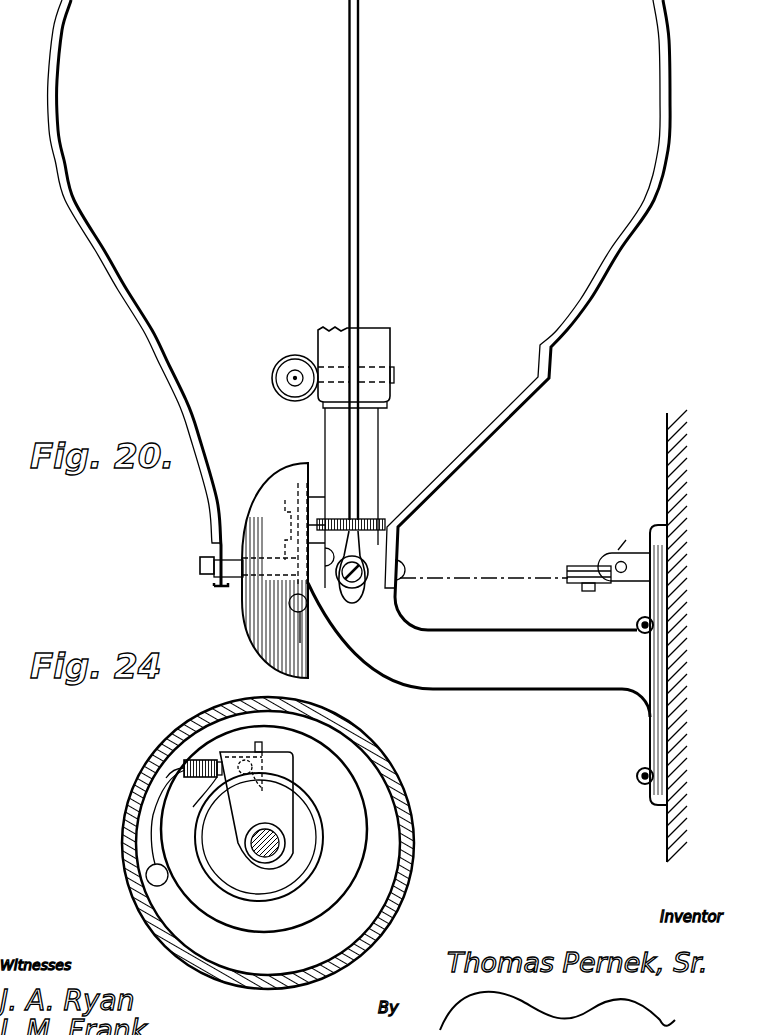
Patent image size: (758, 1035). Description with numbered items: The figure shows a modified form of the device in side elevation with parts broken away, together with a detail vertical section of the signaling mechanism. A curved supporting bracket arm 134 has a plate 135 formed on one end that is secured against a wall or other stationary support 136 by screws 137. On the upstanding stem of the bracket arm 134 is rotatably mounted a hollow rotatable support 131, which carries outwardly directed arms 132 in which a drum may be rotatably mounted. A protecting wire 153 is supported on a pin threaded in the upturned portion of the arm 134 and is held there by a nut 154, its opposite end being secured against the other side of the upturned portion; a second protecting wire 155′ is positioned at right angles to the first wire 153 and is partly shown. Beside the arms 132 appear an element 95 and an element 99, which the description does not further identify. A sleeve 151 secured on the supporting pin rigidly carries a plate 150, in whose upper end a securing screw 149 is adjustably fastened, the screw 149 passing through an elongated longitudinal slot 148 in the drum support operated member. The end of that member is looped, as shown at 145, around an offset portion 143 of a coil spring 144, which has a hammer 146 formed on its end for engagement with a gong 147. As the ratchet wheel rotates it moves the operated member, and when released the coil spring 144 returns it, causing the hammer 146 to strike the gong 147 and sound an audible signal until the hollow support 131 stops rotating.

In FIG. 20, the protecting wire 153 is at (125, 301).
In FIG. 20, the second protecting wire 155′ is at (362, 228).
In FIG. 20, the outwardly directed arms 132 is at (390, 349).
In FIG. 20, the hollow rotatable support 131 is at (372, 446).
In FIG. 20, the roller 95 is at (286, 367).
In FIG. 20, the roller pin 99 is at (294, 381).
In FIG. 20, the nut 154 is at (203, 559).
In FIG. 20, the sleeve 151 is at (234, 584).
In FIG. 24, the sleeve 151 is at (281, 862).
In FIG. 20, the curved supporting bracket arm 134 is at (447, 643).
In FIG. 20, the plate 135 is at (652, 732).
In FIG. 20, the stationary support 136 is at (667, 476).
In FIG. 20, the screws 137 is at (639, 622).
In FIG. 24, the gong 147 is at (413, 872).
In FIG. 24, the coil spring 144 is at (205, 758).
In FIG. 24, the securing screw 149 is at (275, 748).
In FIG. 24, the plate 150 is at (278, 783).
In FIG. 24, the offset portion 143 is at (185, 766).
In FIG. 24, the elongated longitudinal slot 148 is at (198, 800).
In FIG. 24, the hammer 146 is at (146, 876).
In FIG. 24, the loop 145 is at (218, 782).